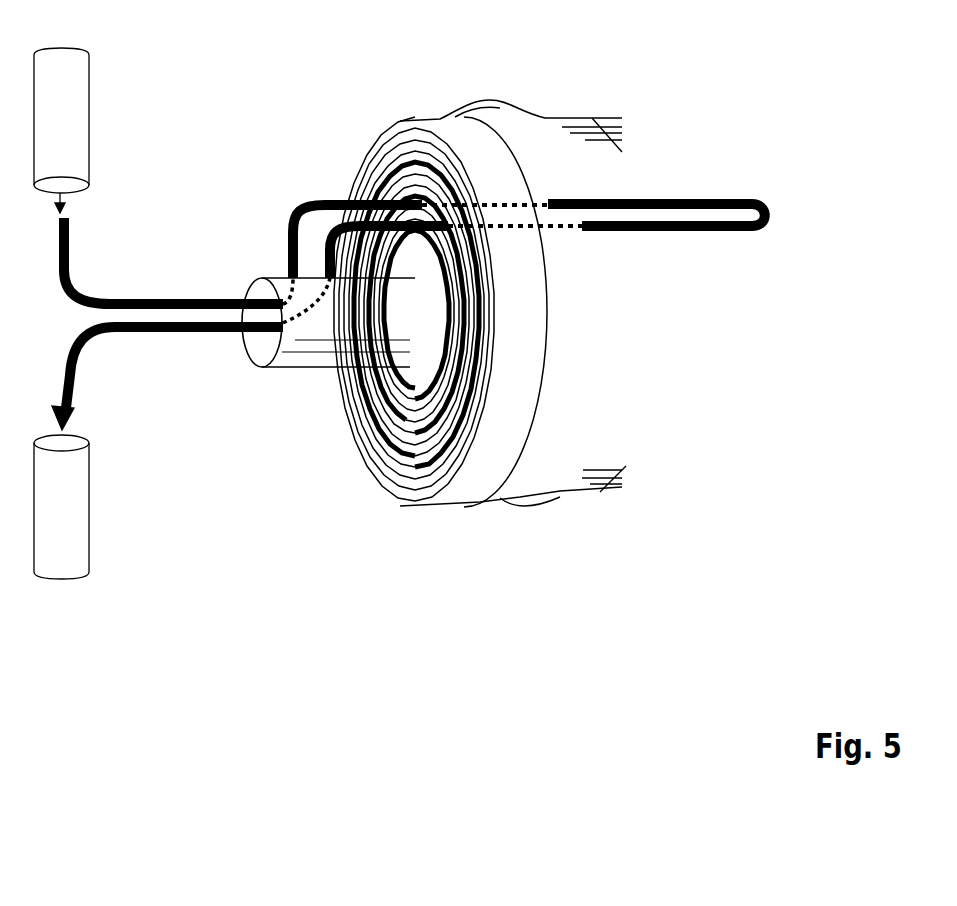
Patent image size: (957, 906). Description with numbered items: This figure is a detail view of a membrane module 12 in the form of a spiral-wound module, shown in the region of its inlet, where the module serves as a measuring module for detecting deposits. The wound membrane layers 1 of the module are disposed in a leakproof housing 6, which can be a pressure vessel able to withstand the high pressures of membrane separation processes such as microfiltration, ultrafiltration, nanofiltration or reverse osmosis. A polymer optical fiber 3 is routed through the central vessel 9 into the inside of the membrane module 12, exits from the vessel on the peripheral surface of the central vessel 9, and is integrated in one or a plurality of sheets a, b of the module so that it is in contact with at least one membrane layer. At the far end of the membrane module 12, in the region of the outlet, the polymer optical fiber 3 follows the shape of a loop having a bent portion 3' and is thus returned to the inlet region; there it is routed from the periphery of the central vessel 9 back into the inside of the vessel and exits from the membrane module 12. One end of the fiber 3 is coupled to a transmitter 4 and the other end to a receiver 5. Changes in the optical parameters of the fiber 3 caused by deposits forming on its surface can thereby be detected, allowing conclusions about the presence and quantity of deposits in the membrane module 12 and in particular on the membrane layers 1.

The membrane layers 1 is at (367, 174).
The polymer optical fiber 3 is at (250, 315).
The bent portion 3' is at (644, 147).
The transmitter 4 is at (69, 127).
The receiver 5 is at (73, 534).
The housing 6 is at (493, 457).
The central vessel 9 is at (328, 337).
The membrane module 12 is at (677, 356).
The sheet a is at (352, 440).
The sheet b is at (372, 402).